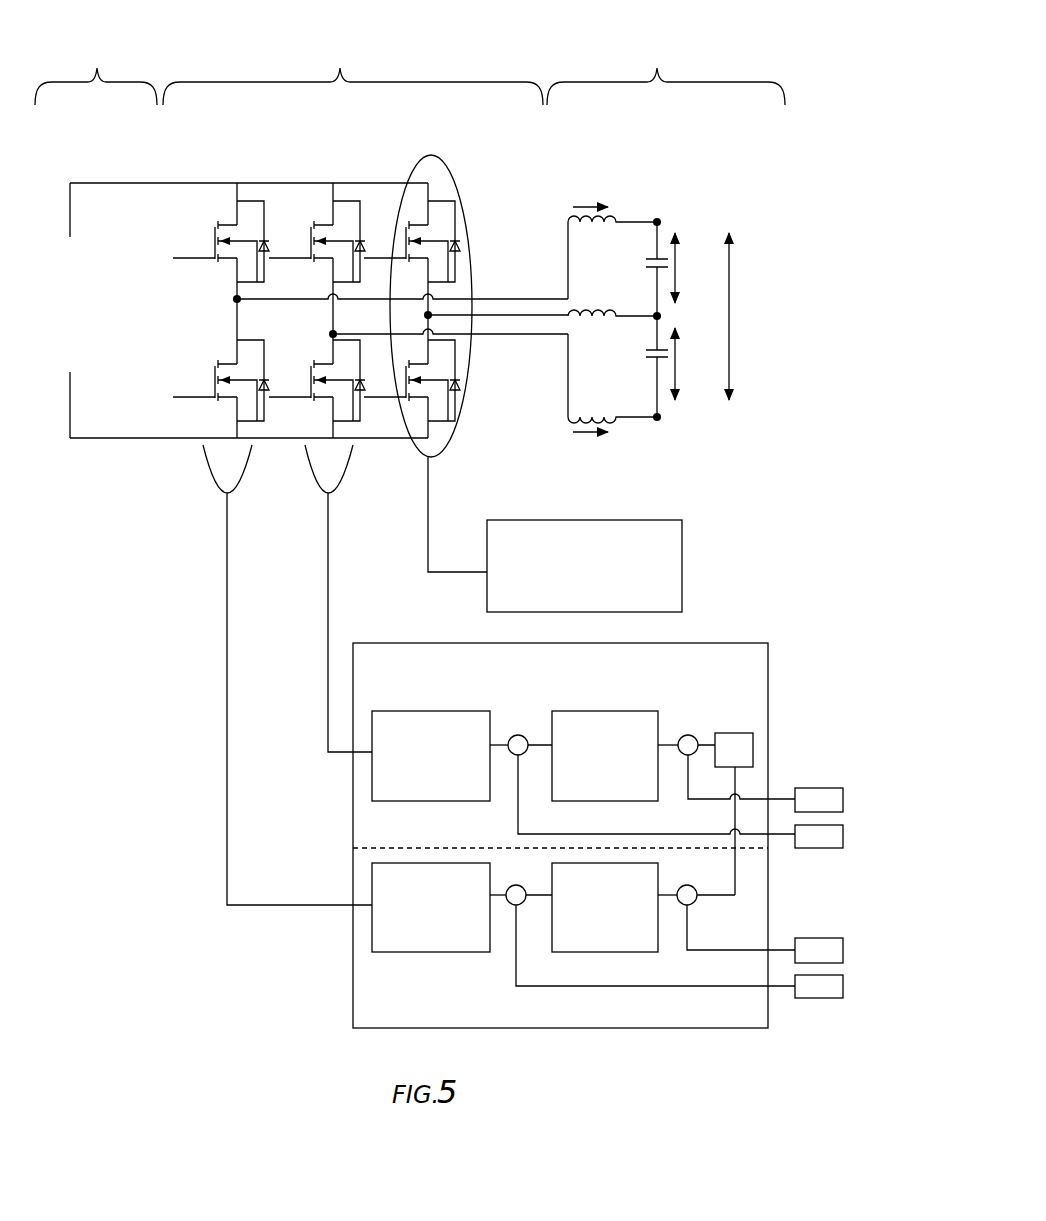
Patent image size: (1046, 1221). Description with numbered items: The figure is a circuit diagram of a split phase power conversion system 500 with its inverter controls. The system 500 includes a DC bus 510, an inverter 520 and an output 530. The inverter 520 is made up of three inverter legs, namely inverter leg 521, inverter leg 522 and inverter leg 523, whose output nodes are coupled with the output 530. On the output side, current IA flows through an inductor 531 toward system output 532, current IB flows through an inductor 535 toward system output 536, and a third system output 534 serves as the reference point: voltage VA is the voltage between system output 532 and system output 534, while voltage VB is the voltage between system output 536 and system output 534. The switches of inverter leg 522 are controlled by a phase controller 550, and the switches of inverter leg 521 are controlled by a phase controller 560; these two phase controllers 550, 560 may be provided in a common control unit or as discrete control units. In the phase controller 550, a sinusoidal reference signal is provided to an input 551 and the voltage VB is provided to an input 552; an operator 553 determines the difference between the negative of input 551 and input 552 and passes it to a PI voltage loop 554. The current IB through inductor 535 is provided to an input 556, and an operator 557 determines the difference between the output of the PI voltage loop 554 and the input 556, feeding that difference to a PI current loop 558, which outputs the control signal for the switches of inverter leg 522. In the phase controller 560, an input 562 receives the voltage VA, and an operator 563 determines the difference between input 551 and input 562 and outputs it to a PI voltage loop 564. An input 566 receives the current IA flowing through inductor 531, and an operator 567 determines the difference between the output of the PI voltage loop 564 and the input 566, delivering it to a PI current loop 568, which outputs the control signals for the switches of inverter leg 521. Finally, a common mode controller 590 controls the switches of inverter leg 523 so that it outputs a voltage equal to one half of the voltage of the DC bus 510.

The system 500 is at (707, 58).
The DC bus 510 is at (96, 240).
The inverter 520 is at (306, 240).
The inverter leg 521 is at (236, 180).
The inverter leg 522 is at (332, 180).
The inverter leg 523 is at (427, 180).
The output 530 is at (666, 230).
The inductor 531 is at (594, 226).
The system output 532 is at (657, 221).
The system output 534 is at (655, 319).
The inductor 535 is at (595, 416).
The system output 536 is at (660, 420).
The common mode controller 590 is at (683, 543).
The phase controller 550 is at (760, 643).
The input 551 is at (735, 733).
The input 552 is at (831, 788).
The operator 553 is at (688, 735).
The PI voltage loop 554 is at (607, 711).
The input 556 is at (810, 848).
The operator 557 is at (518, 735).
The PI current loop 558 is at (437, 711).
The phase controller 560 is at (740, 1028).
The input 562 is at (832, 938).
The operator 563 is at (692, 886).
The PI voltage loop 564 is at (605, 952).
The input 566 is at (810, 998).
The operator 567 is at (520, 886).
The PI current loop 568 is at (437, 952).